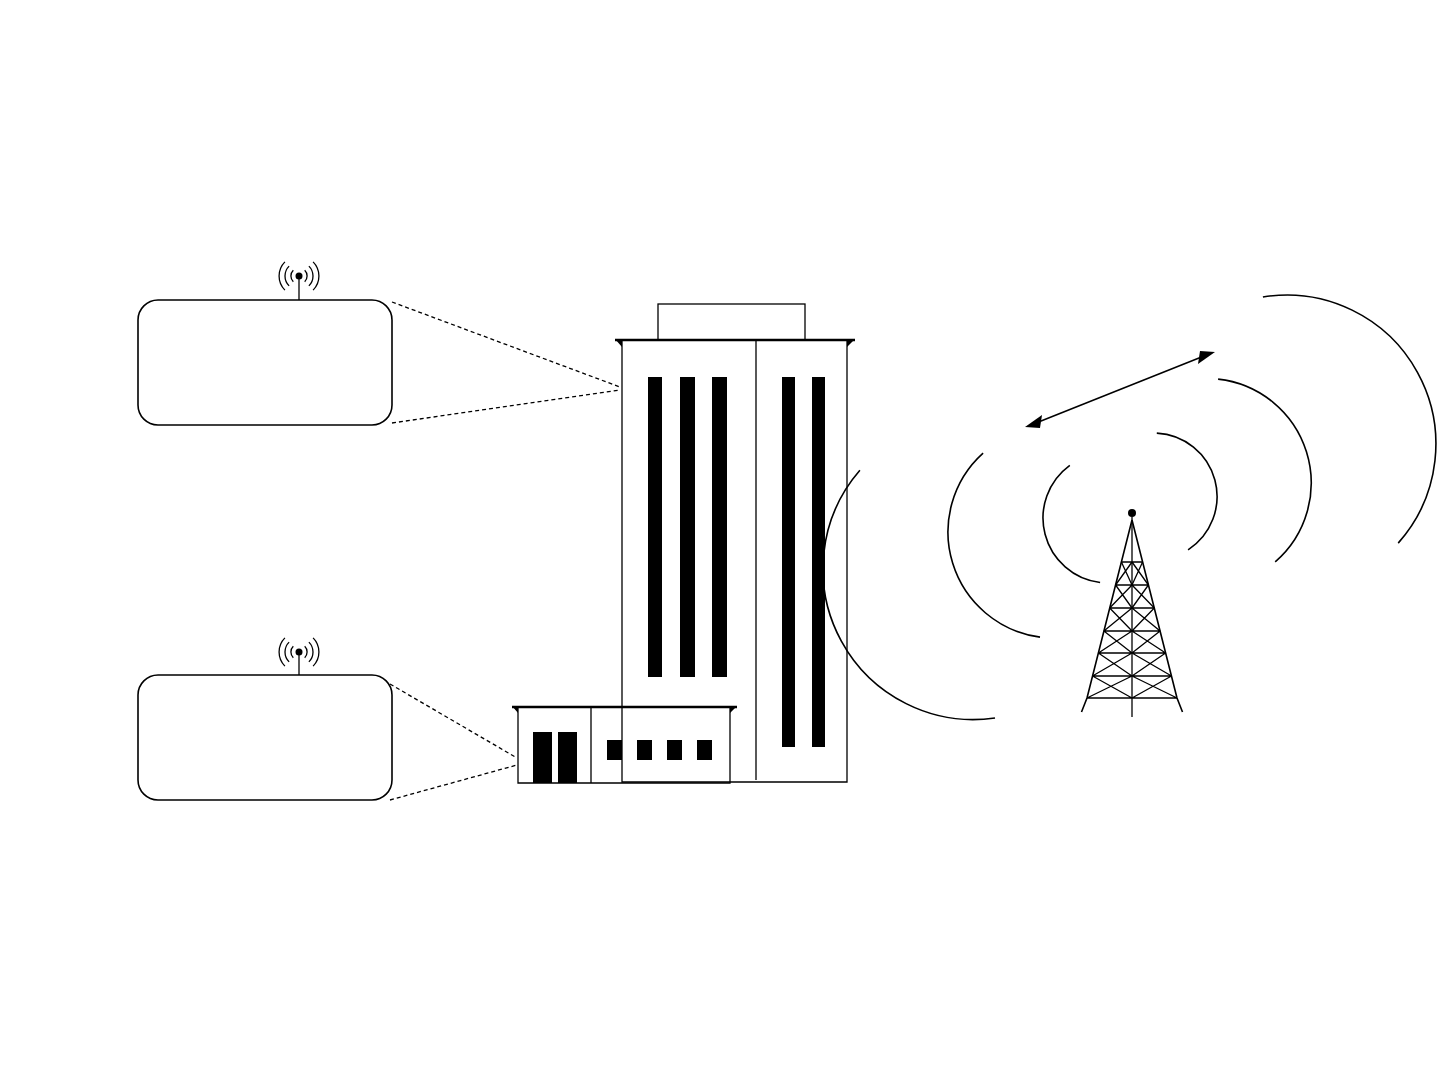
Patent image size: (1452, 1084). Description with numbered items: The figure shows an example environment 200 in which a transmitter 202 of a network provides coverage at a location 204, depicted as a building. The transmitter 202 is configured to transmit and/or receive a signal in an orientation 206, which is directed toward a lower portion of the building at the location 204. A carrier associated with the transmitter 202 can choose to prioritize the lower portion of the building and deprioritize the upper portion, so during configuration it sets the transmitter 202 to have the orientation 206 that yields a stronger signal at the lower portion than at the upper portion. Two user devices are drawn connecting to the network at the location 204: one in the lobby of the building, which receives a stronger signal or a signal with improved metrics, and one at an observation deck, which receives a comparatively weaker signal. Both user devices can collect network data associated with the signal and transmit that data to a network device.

The environment 200 is at (208, 84).
The transmitter 202 is at (1181, 709).
The location 204 is at (637, 340).
The orientation 206 is at (1123, 387).